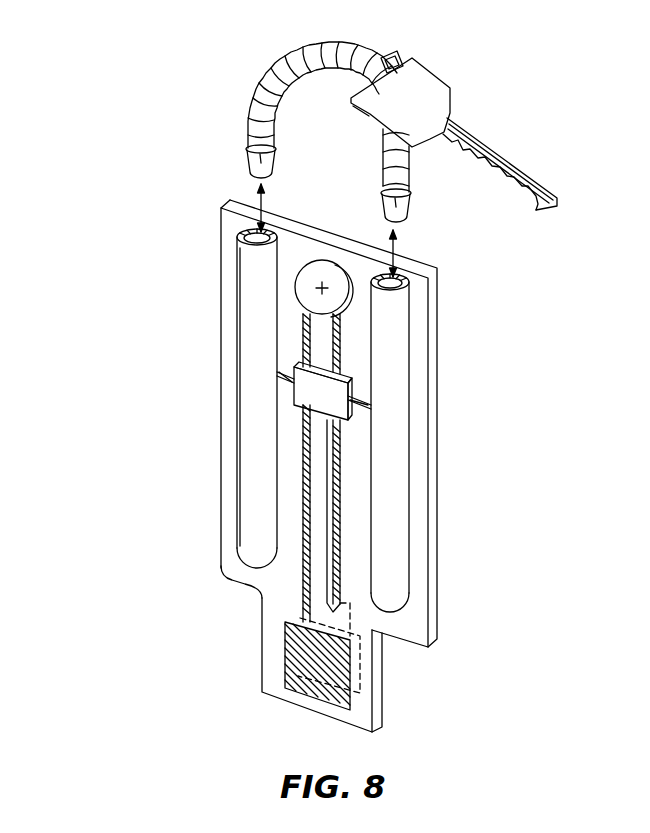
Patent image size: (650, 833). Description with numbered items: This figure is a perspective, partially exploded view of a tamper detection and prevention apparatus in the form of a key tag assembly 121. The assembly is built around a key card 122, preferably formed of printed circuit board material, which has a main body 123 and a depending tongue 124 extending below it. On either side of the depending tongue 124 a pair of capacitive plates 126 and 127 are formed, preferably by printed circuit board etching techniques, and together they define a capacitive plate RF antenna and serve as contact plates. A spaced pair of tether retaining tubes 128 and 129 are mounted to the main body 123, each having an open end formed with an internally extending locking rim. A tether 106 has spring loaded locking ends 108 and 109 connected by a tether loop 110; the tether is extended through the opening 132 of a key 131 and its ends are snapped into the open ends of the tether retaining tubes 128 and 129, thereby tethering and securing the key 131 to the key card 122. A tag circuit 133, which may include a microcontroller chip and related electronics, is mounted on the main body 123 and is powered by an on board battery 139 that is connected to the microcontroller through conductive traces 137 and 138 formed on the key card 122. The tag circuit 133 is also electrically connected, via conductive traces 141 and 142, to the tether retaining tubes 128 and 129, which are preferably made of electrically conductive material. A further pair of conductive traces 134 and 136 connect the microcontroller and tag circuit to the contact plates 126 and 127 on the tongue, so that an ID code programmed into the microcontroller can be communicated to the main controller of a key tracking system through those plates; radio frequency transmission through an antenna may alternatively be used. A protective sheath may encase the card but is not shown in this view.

The tether 106 is at (320, 117).
The spring loaded locking end 108 is at (398, 205).
The spring loaded locking end 109 is at (248, 152).
The tether loop 110 is at (302, 58).
The key tag assembly 121 is at (292, 458).
The key card 122 is at (447, 413).
The main body 123 is at (219, 398).
The depending tongue 124 is at (378, 666).
The capacitive plate 126 is at (288, 668).
The capacitive plate 127 is at (372, 700).
The tether retaining tube 128 is at (434, 443).
The tether retaining tube 129 is at (255, 452).
The key 131 is at (454, 114).
The opening 132 is at (392, 62).
The tag circuit 133 is at (318, 405).
The conductive trace 134 is at (302, 535).
The conductive trace 136 is at (342, 592).
The conductive trace 137 is at (380, 334).
The conductive trace 138 is at (300, 328).
The on board battery 139 is at (310, 295).
The conductive trace 141 is at (362, 392).
The conductive trace 142 is at (292, 378).